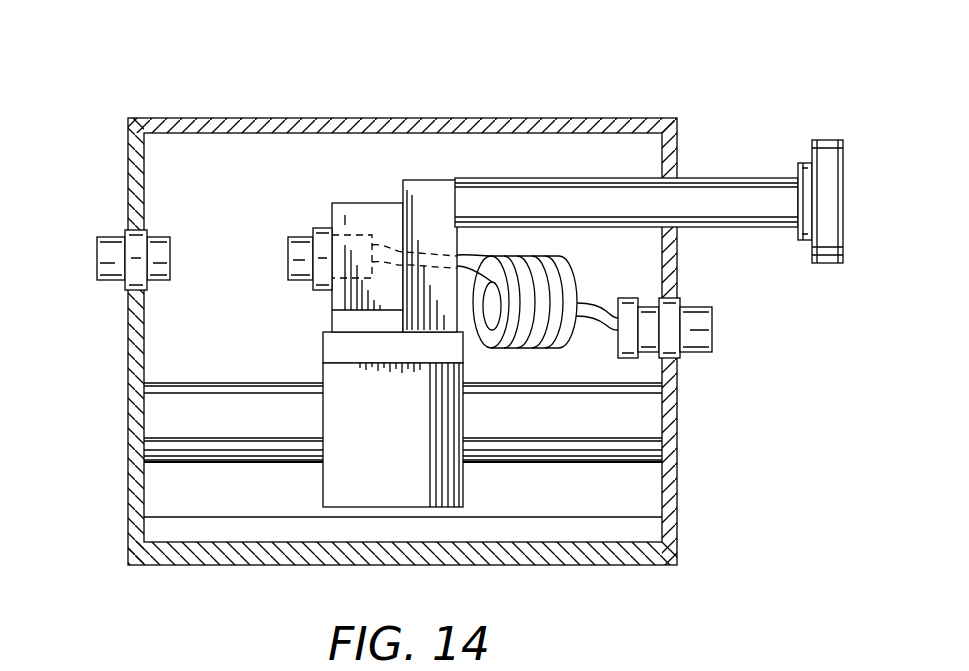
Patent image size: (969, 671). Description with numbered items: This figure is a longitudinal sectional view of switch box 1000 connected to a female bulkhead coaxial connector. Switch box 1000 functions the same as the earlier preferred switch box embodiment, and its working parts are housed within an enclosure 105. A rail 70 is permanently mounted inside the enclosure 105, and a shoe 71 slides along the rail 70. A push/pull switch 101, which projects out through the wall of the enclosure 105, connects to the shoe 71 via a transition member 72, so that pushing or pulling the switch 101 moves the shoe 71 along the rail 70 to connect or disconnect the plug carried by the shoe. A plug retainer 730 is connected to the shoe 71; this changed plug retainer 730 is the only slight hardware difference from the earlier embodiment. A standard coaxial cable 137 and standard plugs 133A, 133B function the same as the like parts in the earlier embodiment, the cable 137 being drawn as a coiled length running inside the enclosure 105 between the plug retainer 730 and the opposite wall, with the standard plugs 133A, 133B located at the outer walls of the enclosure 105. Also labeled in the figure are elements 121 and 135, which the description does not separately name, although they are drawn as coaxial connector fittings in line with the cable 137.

The switch box 1000 is at (725, 97).
The enclosure 105 is at (186, 121).
The plug retainer 730 is at (382, 203).
The transition member 72 is at (445, 180).
The push/pull switch 101 is at (830, 140).
The connector 121 is at (301, 237).
The coaxial cable 137 is at (567, 290).
The connector 135 is at (628, 298).
The standard plug 133A is at (106, 280).
The standard plug 133B is at (701, 352).
The shoe 71 is at (413, 463).
The rail 70 is at (587, 430).